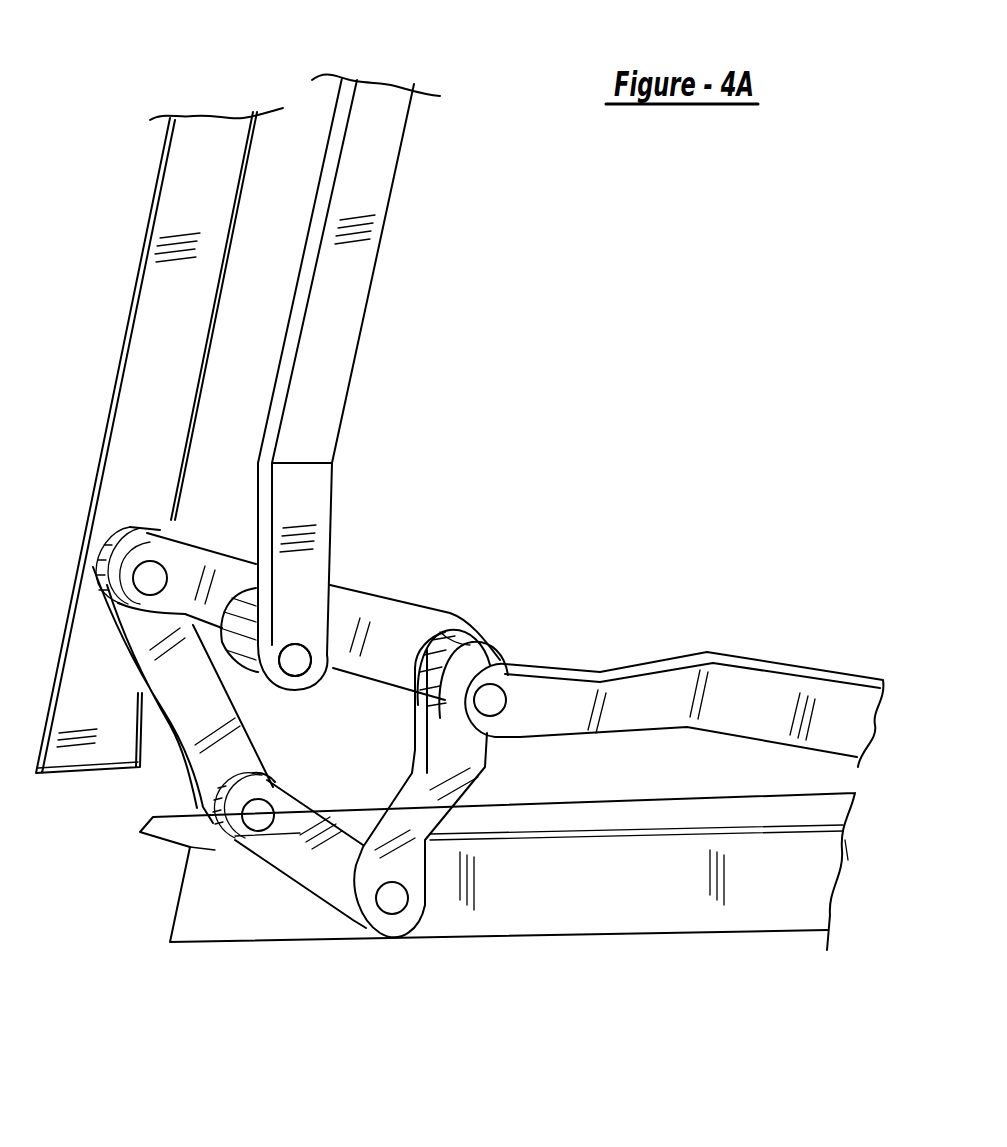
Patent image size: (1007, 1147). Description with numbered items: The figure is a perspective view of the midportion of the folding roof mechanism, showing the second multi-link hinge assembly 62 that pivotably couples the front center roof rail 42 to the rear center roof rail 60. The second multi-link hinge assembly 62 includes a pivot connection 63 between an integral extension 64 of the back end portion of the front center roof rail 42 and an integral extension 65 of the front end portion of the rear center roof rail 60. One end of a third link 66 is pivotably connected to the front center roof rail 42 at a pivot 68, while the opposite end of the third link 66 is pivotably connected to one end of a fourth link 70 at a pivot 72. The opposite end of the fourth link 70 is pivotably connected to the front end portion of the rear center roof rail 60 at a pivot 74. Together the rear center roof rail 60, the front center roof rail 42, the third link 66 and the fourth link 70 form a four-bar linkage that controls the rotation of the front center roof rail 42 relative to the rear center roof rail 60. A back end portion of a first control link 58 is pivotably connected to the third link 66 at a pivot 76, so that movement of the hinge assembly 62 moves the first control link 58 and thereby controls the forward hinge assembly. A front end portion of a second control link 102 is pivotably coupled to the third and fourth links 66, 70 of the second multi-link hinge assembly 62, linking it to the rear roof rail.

The front center roof rail 42 is at (200, 138).
The first control link 58 is at (385, 112).
The rear center roof rail 60 is at (563, 890).
The second multi-link hinge assembly 62 is at (566, 464).
The pivot connection 63 is at (256, 825).
The integral extension 64 is at (158, 665).
The integral extension 65 is at (327, 833).
The third link 66 is at (390, 635).
The pivot 68 is at (148, 580).
The fourth link 70 is at (433, 800).
The pivot 72 is at (490, 700).
The pivot 74 is at (395, 900).
The pivot 76 is at (296, 660).
The second control link 102 is at (653, 697).